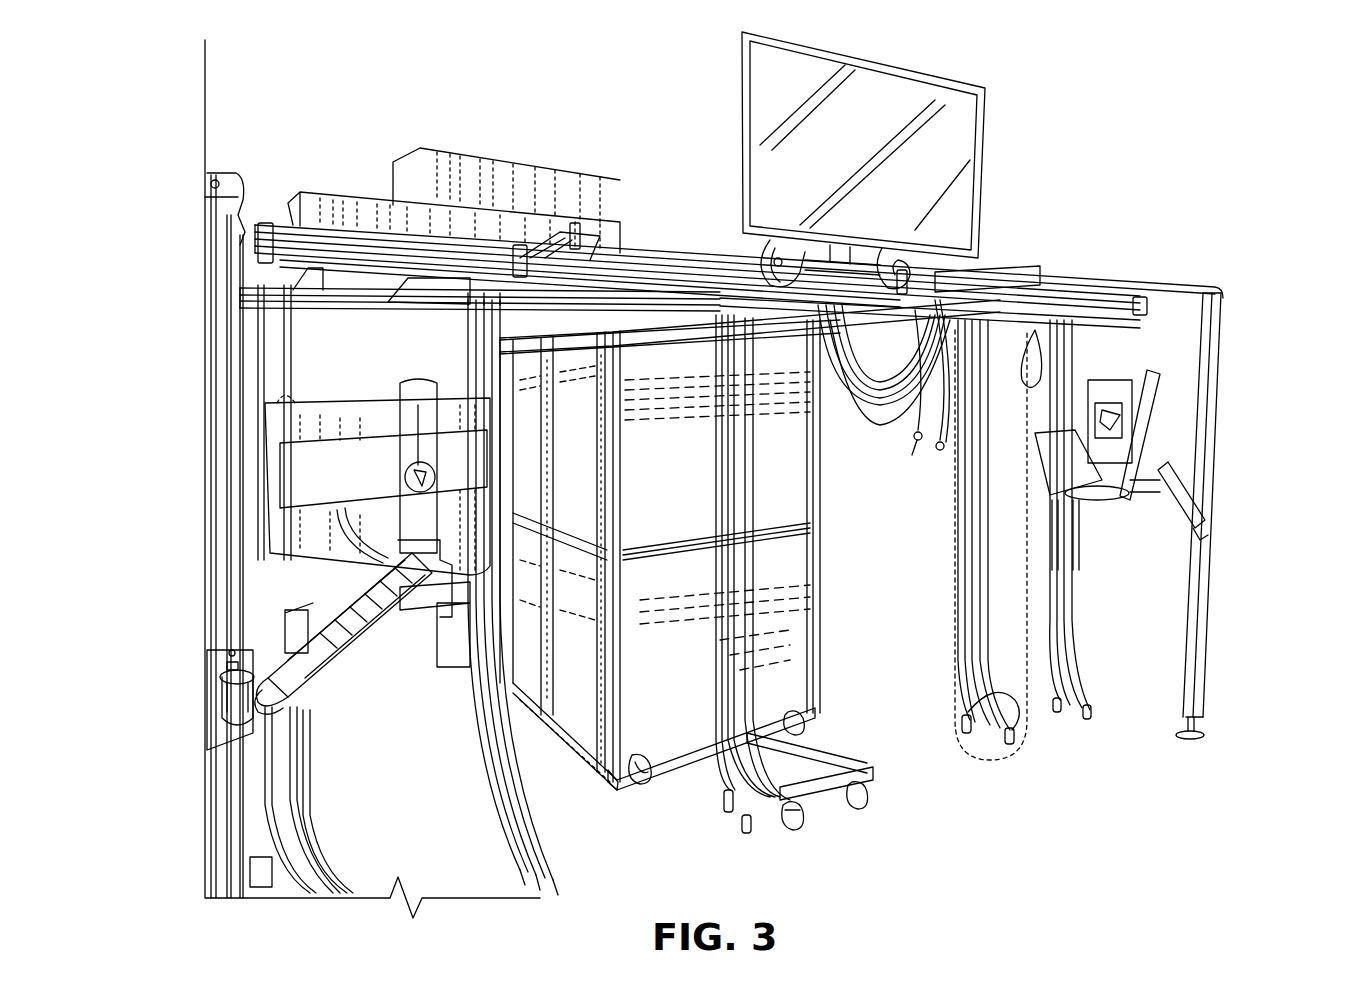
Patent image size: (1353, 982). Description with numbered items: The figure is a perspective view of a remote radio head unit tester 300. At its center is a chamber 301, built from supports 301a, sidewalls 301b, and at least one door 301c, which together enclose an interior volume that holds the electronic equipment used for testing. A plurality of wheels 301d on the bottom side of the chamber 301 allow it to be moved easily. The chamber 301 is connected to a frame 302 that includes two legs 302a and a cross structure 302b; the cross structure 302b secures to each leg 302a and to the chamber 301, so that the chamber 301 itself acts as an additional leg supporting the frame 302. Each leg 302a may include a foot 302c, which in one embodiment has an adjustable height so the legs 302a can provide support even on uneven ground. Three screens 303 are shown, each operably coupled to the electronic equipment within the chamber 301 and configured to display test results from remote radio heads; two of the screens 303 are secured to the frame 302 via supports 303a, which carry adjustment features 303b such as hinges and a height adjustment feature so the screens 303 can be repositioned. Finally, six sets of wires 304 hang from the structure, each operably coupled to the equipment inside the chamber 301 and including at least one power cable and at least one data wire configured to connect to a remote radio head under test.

The remote radio head unit tester 300 is at (678, 128).
The chamber 301 is at (832, 470).
The supports 301a is at (542, 692).
The sidewalls 301b is at (793, 648).
The door 301c is at (600, 762).
The wheels 301d is at (808, 727).
The frame 302 is at (1116, 245).
The legs 302a is at (213, 502).
The cross structure 302b is at (1045, 278).
The foot 302c is at (1200, 740).
The screen 303 is at (965, 88).
The supports 303a is at (367, 648).
The adjustment features 303b is at (395, 440).
The set of wires 304 is at (1030, 742).